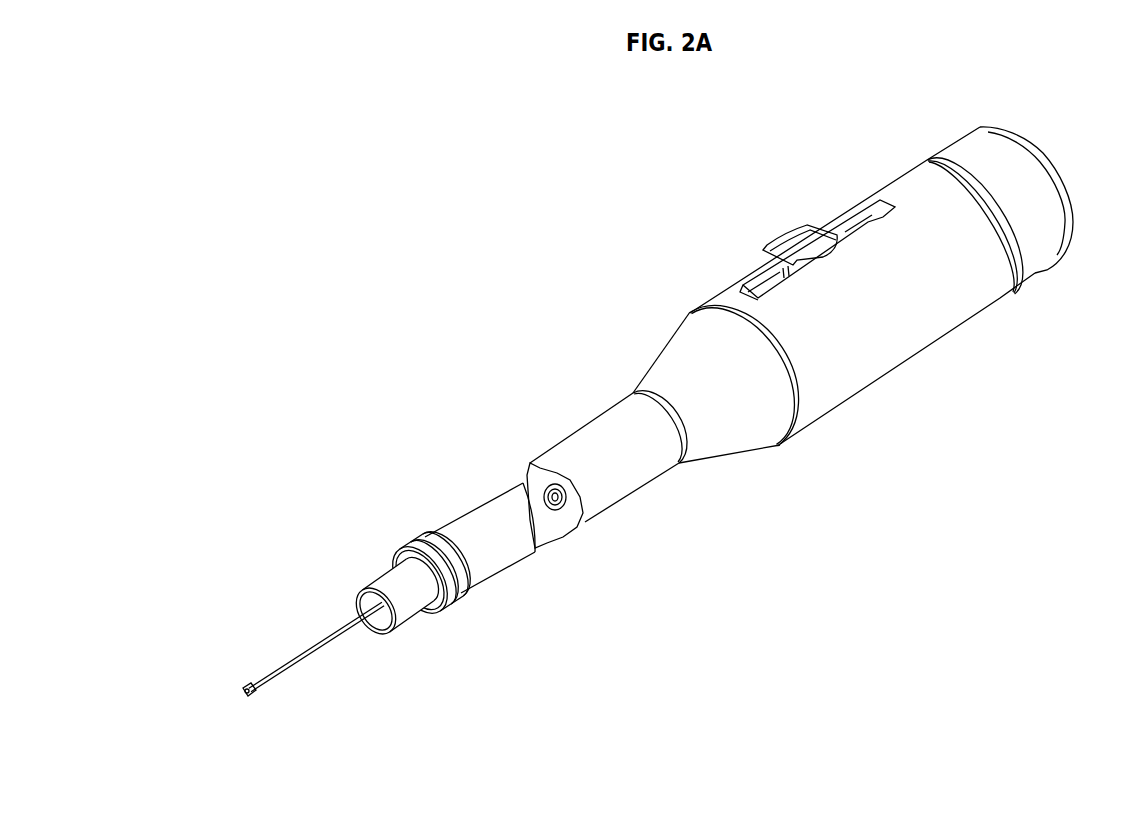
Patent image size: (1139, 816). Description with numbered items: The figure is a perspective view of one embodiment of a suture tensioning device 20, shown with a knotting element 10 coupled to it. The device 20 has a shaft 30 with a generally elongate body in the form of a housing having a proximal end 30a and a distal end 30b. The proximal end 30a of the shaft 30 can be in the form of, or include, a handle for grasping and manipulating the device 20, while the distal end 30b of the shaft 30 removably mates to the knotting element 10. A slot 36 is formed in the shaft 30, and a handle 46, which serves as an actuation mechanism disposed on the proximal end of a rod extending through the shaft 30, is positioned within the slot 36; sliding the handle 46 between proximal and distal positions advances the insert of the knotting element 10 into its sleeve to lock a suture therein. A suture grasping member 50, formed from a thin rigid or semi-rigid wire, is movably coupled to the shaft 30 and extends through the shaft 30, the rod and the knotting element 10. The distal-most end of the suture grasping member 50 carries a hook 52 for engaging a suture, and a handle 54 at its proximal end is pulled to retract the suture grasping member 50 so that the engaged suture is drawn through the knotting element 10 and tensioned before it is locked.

The suture tensioning device 20 is at (394, 204).
The shaft 30 is at (735, 282).
The proximal end of the shaft 30a is at (1010, 324).
The distal end of the shaft 30b is at (463, 624).
The slot 36 is at (877, 215).
The handle 46 is at (806, 213).
The handle 54 is at (1035, 273).
The knotting element 10 is at (387, 578).
The suture grasping member 50 is at (293, 665).
The hook 52 is at (248, 692).